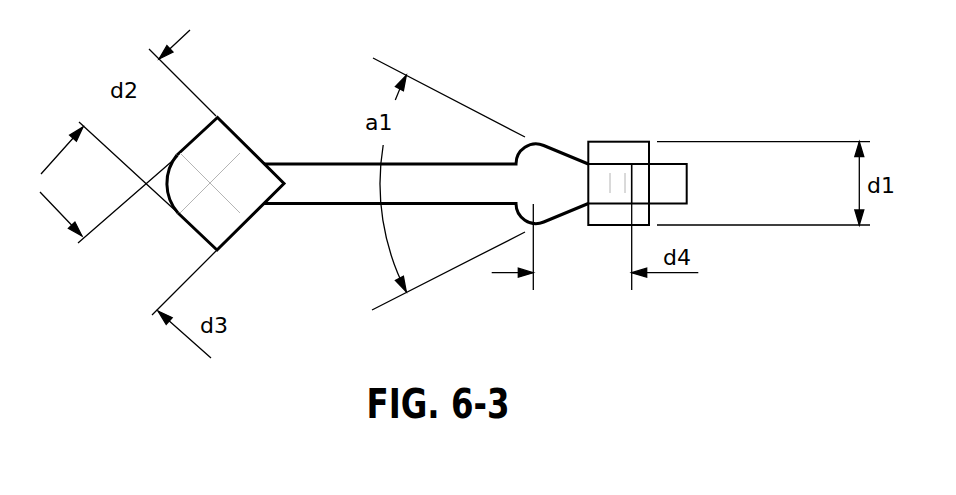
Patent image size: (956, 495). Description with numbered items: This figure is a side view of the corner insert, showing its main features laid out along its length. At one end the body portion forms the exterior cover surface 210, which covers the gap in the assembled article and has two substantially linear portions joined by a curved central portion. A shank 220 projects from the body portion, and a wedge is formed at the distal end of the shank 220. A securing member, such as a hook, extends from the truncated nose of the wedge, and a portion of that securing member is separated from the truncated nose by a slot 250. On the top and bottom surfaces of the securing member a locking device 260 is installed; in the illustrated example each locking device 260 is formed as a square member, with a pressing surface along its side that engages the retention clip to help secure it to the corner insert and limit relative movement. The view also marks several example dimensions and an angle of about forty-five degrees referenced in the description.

The exterior cover surface 210 is at (189, 236).
The shank 220 is at (307, 163).
The slot 250 is at (670, 173).
The locking device 260 is at (628, 155).